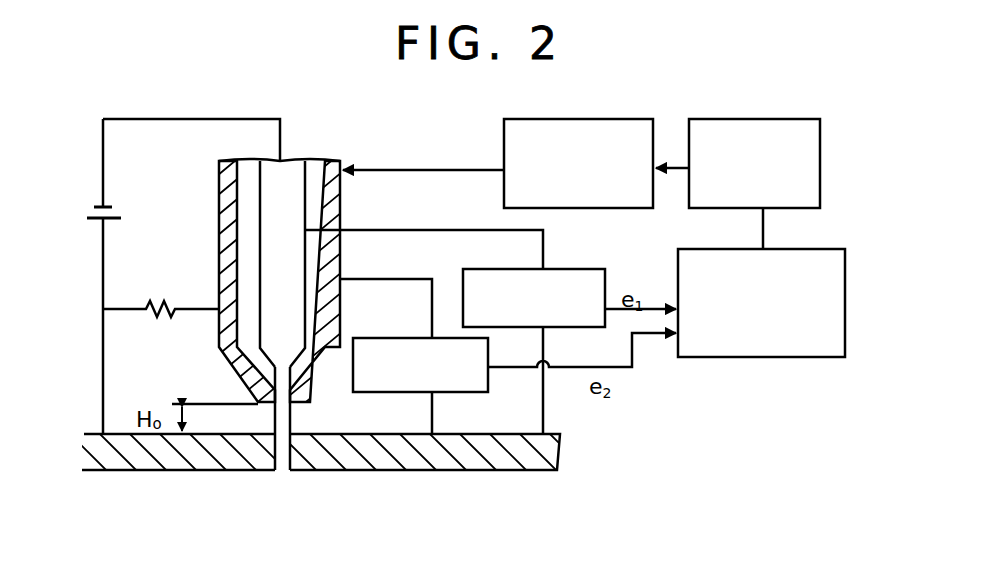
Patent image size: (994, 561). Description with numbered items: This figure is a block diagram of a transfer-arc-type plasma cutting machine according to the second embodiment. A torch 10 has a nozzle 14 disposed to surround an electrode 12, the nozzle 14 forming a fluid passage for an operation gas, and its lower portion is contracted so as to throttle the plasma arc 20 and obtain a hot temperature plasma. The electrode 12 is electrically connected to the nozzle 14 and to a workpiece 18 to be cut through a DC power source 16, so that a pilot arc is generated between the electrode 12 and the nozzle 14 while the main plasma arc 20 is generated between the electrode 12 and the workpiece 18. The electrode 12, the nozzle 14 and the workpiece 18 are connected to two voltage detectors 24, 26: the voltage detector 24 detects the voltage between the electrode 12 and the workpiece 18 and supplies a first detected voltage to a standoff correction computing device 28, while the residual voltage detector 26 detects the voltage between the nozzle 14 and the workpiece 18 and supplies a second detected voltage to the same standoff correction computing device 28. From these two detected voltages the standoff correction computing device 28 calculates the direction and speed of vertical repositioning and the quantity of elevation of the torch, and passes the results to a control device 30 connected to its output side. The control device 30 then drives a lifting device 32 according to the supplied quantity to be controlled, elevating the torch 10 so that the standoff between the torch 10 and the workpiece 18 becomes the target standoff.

The torch 10 is at (271, 293).
The electrode 12 is at (291, 160).
The nozzle 14 is at (341, 160).
The DC power source 16 is at (95, 206).
The workpiece 18 is at (375, 471).
The plasma arc 20 is at (280, 472).
The voltage detector 24 is at (476, 268).
The residual voltage detector 26 is at (386, 337).
The standoff correction computing device 28 is at (757, 358).
The control device 30 is at (725, 118).
The lifting device 32 is at (558, 118).